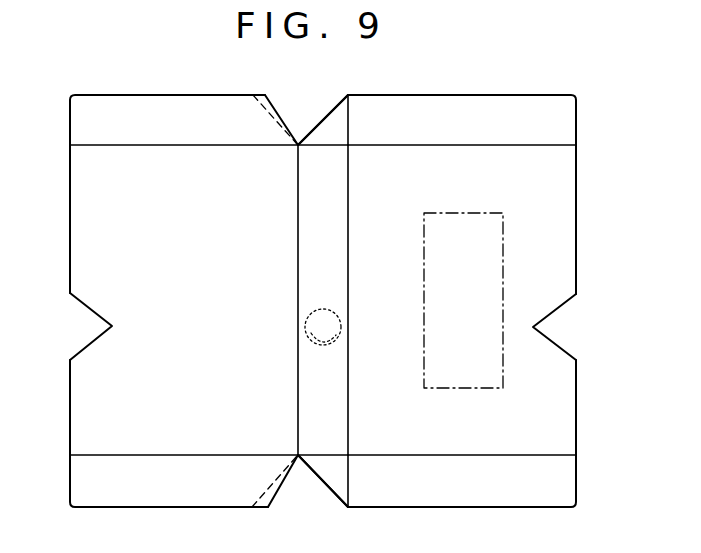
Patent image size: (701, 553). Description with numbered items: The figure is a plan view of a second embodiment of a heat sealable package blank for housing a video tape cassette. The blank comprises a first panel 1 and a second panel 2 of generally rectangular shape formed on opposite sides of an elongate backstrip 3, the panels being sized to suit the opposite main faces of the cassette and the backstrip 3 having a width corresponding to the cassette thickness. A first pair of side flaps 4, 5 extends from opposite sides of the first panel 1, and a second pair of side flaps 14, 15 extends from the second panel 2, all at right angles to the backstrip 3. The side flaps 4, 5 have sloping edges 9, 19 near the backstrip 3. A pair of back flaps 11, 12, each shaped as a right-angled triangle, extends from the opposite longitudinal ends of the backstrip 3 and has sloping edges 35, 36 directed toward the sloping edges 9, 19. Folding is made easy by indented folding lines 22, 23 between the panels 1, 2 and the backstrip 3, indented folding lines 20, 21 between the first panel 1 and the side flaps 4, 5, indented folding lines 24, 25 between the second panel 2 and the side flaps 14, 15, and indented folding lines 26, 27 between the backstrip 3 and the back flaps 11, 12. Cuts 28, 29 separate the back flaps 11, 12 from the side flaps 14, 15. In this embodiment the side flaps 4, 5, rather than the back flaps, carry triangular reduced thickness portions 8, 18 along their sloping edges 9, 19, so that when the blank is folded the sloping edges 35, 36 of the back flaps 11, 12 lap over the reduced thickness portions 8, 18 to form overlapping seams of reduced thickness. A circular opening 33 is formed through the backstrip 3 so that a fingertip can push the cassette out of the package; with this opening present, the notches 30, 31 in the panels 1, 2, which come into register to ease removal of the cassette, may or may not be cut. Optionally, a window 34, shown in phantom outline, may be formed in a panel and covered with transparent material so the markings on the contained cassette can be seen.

The first panel 1 is at (175, 254).
The second panel 2 is at (377, 254).
The backstrip 3 is at (314, 254).
The side flap 4 is at (159, 135).
The side flap 5 is at (156, 496).
The reduced thickness portion 8 is at (263, 98).
The sloping edge 9 is at (279, 107).
The back flap 11 is at (323, 130).
The back flap 12 is at (334, 482).
The side flap 14 is at (466, 137).
The side flap 15 is at (464, 496).
The reduced thickness portion 18 is at (263, 506).
The sloping edge 19 is at (289, 478).
The indented folding line 20 is at (237, 148).
The indented folding line 21 is at (210, 452).
The indented folding line 22 is at (297, 291).
The indented folding line 23 is at (350, 292).
The indented folding line 24 is at (452, 148).
The indented folding line 25 is at (440, 453).
The indented folding line 26 is at (326, 148).
The indented folding line 27 is at (326, 452).
The cut 28 is at (350, 120).
The cut 29 is at (350, 475).
The notch 30 is at (90, 343).
The notch 31 is at (560, 310).
The circular opening 33 is at (313, 338).
The window 34 is at (490, 222).
The sloping edge 35 is at (335, 104).
The sloping edge 36 is at (340, 502).